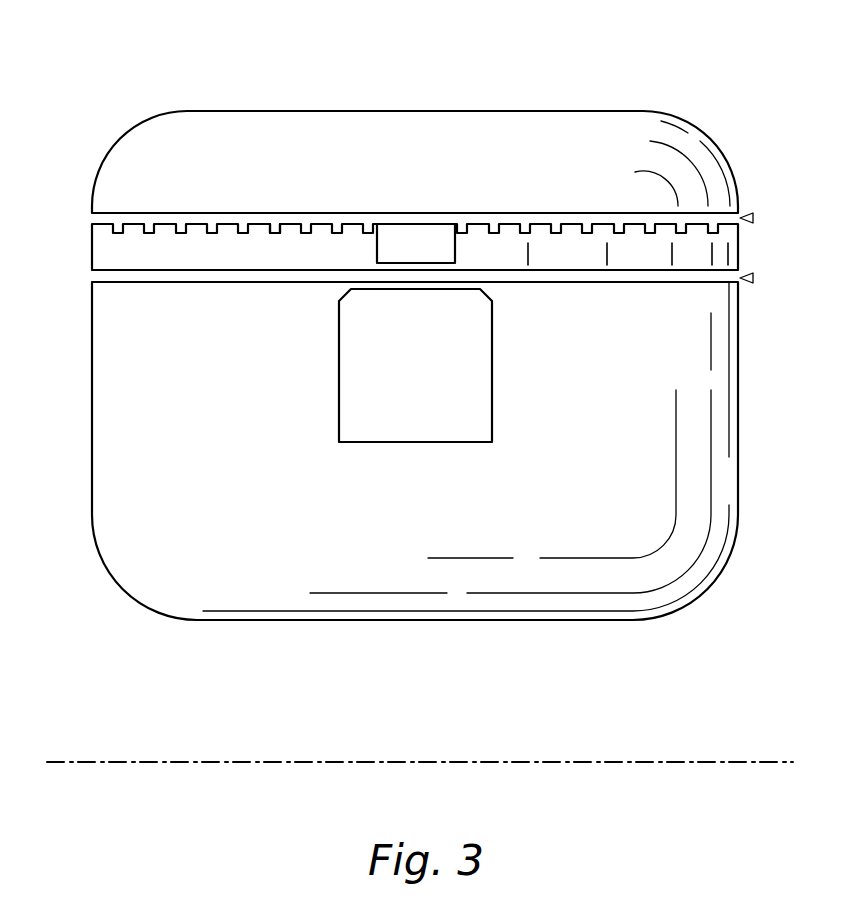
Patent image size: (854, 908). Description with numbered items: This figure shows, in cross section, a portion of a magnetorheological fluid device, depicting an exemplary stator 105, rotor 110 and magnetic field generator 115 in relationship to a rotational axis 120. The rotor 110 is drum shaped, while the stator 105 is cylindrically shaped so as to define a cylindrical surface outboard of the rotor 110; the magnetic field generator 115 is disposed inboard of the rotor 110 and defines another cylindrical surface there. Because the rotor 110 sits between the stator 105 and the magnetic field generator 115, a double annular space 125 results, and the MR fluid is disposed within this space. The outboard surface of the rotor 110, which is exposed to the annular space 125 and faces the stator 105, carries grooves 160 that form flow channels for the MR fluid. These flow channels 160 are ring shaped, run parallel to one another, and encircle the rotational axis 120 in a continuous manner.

The stator 105 is at (556, 145).
The rotor 110 is at (122, 252).
The magnetic field generator 115 is at (642, 463).
The rotational axis 120 is at (655, 762).
The double annular space 125 is at (753, 218).
The grooves 160 is at (279, 222).